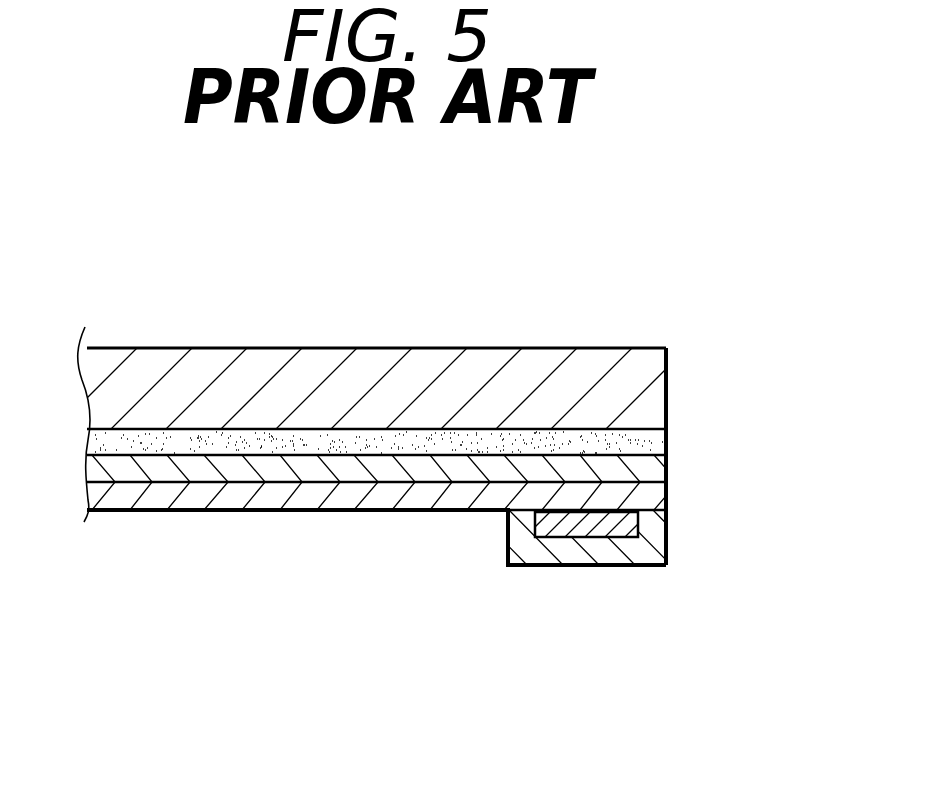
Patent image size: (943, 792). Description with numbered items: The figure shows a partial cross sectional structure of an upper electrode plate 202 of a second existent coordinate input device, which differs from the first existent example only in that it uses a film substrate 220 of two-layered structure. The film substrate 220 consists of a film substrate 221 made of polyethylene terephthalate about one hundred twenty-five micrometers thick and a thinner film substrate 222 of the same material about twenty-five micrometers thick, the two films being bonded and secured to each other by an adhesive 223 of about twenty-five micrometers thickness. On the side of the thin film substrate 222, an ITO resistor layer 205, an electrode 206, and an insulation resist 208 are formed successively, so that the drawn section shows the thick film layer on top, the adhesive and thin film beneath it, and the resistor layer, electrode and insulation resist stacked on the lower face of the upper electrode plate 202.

The upper electrode plate 202 is at (385, 663).
The film substrate 220 is at (429, 417).
The film substrate 221 is at (637, 392).
The adhesive 223 is at (655, 444).
The film substrate 222 is at (433, 462).
The ITO resistor layer 205 is at (662, 500).
The electrode 206 is at (642, 535).
The insulation resist 208 is at (573, 567).